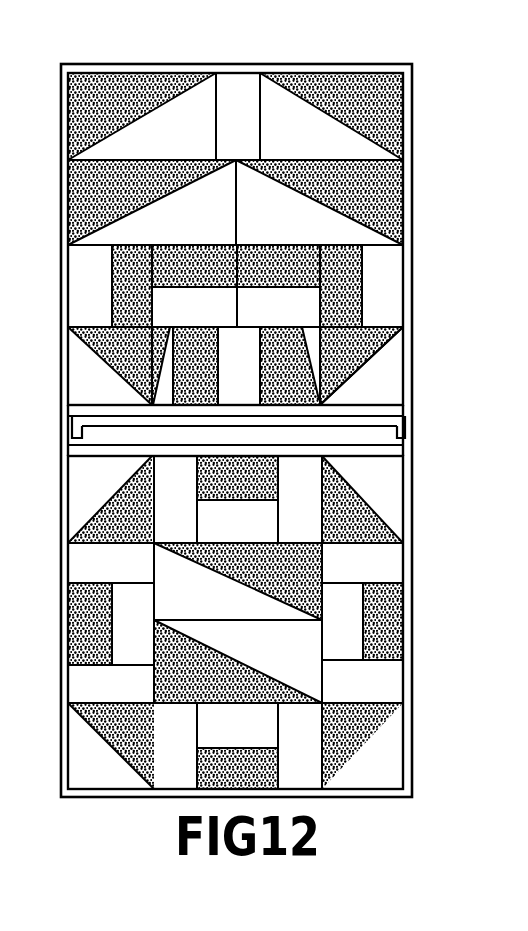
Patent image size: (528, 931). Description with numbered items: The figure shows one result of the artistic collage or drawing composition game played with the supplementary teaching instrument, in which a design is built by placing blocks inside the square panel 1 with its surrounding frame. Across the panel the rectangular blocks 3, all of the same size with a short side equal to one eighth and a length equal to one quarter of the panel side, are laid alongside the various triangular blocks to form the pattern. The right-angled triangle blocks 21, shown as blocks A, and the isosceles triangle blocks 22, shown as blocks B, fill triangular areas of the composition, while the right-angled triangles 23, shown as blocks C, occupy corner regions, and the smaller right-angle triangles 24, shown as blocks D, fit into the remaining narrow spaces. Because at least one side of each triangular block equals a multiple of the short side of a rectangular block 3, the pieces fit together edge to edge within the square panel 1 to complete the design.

The square panel 1 is at (162, 792).
The rectangular blocks 3 is at (242, 88).
The right-angled triangle blocks 21 is at (403, 209).
The isosceles triangle blocks 22 is at (397, 345).
The right-angled triangles 23 is at (383, 77).
The smaller right-angle triangles 24 is at (337, 388).